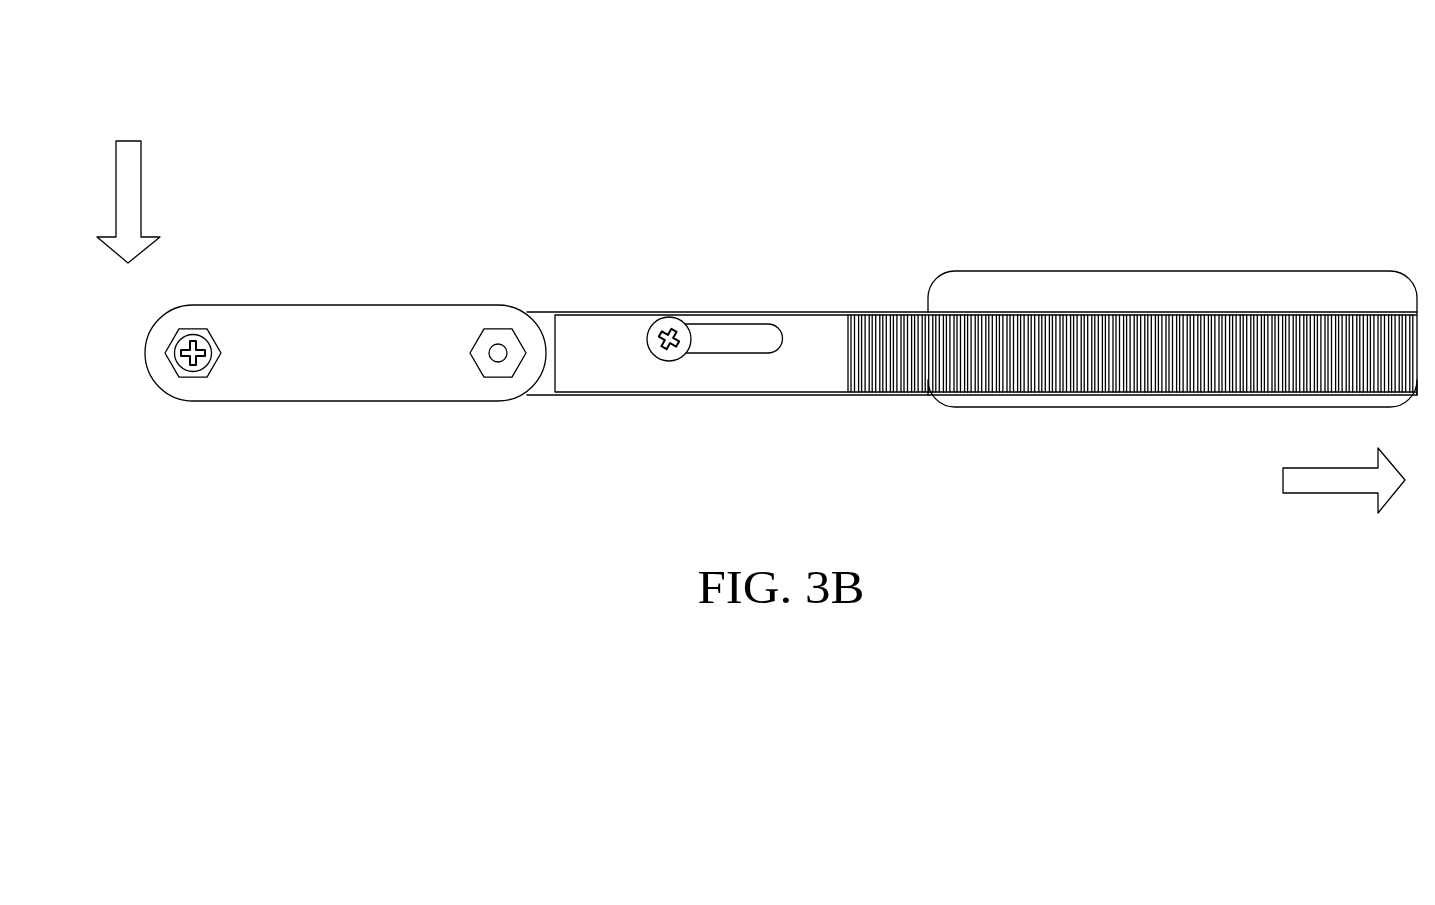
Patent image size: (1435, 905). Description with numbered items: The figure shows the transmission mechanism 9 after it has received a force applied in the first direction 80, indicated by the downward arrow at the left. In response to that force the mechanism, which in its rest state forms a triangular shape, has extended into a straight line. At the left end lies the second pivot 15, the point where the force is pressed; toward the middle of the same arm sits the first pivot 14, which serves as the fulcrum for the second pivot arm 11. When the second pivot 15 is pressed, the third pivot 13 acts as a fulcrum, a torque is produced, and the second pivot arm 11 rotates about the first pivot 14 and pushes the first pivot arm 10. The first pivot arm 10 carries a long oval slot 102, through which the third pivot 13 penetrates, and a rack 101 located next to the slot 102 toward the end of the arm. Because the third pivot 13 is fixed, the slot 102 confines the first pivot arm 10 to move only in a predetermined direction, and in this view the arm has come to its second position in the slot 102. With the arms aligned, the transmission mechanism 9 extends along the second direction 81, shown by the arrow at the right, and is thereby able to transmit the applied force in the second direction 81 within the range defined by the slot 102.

The transmission mechanism 9 is at (349, 43).
The first pivot arm 10 is at (1140, 257).
The rack 101 is at (1174, 380).
The slot 102 is at (738, 340).
The second pivot arm 11 is at (345, 402).
The third pivot 13 is at (655, 322).
The first pivot 14 is at (498, 362).
The second pivot 15 is at (193, 329).
The first direction 80 is at (129, 141).
The second direction 81 is at (1329, 495).